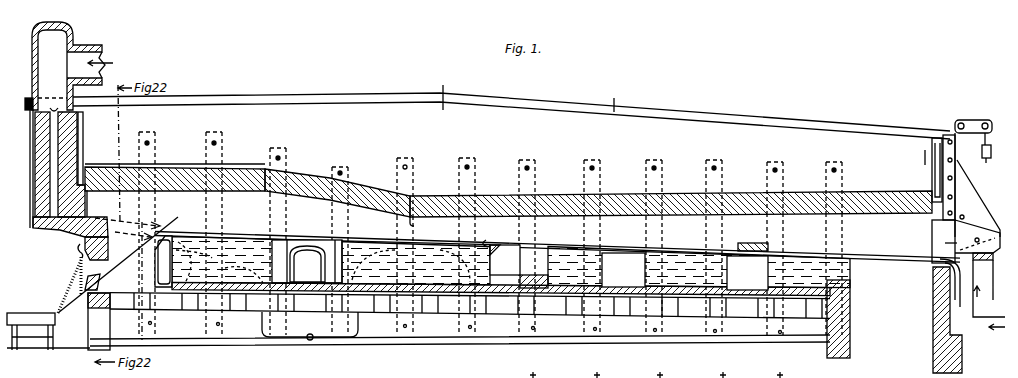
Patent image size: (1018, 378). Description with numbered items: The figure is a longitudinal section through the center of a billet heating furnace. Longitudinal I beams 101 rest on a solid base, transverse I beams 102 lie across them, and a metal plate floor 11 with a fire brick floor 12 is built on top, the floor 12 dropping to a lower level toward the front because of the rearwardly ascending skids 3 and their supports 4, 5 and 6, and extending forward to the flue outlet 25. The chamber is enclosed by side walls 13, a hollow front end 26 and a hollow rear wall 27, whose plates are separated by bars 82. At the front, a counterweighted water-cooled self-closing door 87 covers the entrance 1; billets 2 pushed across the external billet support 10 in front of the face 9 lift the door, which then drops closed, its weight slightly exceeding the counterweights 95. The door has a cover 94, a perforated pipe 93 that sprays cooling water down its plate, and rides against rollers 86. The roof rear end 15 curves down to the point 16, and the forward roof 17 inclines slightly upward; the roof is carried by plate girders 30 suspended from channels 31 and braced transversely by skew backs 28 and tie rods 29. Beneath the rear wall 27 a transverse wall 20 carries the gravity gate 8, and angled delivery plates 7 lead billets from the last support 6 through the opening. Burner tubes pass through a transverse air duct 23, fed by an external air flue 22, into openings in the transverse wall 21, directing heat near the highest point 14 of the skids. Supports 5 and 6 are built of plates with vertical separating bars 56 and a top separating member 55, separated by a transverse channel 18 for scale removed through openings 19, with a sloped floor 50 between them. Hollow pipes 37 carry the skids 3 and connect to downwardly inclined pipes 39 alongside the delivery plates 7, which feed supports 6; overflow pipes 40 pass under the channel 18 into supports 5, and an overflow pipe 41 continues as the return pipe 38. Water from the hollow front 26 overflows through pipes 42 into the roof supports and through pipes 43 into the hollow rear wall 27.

The entrance 1 is at (933, 237).
The billets 2 is at (545, 259).
The skids 3 is at (557, 243).
The skid supports 4 is at (680, 267).
The skid support 5 is at (334, 261).
The skid support 6 is at (164, 262).
The delivery plates 7 is at (134, 281).
The gravity gate 8 is at (79, 271).
The face of the opening 9 is at (946, 244).
The external billet support 10 is at (989, 295).
The metal plate floor 11 is at (470, 303).
The fire brick floor 12 is at (501, 282).
The side walls 13 is at (490, 262).
The highest point of the skids 14 is at (127, 263).
The rear end of roof 15 is at (228, 188).
The point of roof 16 is at (349, 202).
The roof 17 is at (671, 208).
The transverse channel 18 is at (307, 285).
The openings 19 is at (307, 264).
The transverse wall 20 is at (127, 229).
The transverse wall 21 is at (70, 223).
The external air flue 22 is at (97, 154).
The transverse air duct 23 is at (36, 177).
The flue outlet 25 is at (851, 323).
The hollow front end 26 is at (956, 172).
The hollow rear wall 27 is at (32, 143).
The skew backs 28 is at (156, 140).
The tie rods 29 is at (223, 142).
The plate girders 30 is at (511, 104).
The channels 31 is at (511, 116).
The outgoing pipes 37 is at (955, 281).
The return pipe 38 is at (950, 302).
The downwardly inclined pipes 39 is at (156, 275).
The overflow pipes 40 is at (267, 292).
The overflow pipe 41 is at (505, 260).
The overflow pipes 42 is at (931, 158).
The pipes 43 is at (84, 129).
The sloped floor 50 is at (15, 169).
The top separating member 55 is at (258, 252).
The vertical separating bars 56 is at (325, 262).
The bars 82 is at (19, 102).
The rollers 86 is at (953, 160).
The self-closing door 87 is at (977, 236).
The perforated pipe 93 is at (971, 211).
The cover 94 is at (976, 190).
The counterweights 95 is at (990, 156).
The I beams 101 is at (628, 336).
The transverse I beams 102 is at (478, 305).